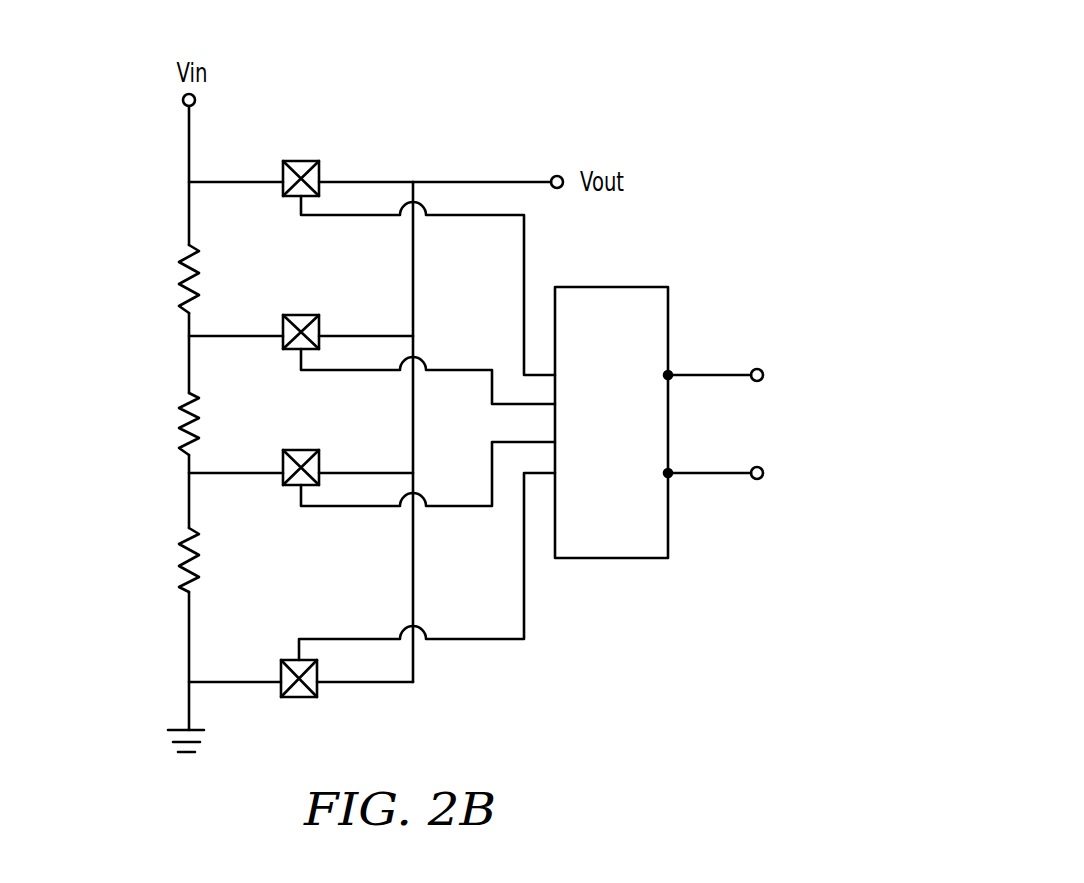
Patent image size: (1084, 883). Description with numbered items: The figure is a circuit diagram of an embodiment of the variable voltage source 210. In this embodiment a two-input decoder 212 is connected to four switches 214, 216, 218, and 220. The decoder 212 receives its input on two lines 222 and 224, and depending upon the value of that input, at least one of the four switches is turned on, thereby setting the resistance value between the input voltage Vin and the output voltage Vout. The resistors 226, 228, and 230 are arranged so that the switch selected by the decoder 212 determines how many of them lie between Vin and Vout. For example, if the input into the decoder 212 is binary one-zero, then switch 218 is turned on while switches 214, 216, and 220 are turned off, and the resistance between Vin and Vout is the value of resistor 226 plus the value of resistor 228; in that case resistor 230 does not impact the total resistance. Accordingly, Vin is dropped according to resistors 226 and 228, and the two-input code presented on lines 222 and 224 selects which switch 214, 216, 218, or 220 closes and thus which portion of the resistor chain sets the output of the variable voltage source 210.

The variable voltage source 210 is at (680, 113).
The 2-input decoder 212 is at (586, 516).
The switch 214 is at (289, 160).
The switch 216 is at (289, 314).
The switch 218 is at (289, 449).
The switch 220 is at (293, 659).
The input line 222 is at (713, 362).
The input line 224 is at (713, 458).
The resistor 226 is at (180, 278).
The resistor 228 is at (180, 420).
The resistor 230 is at (180, 578).